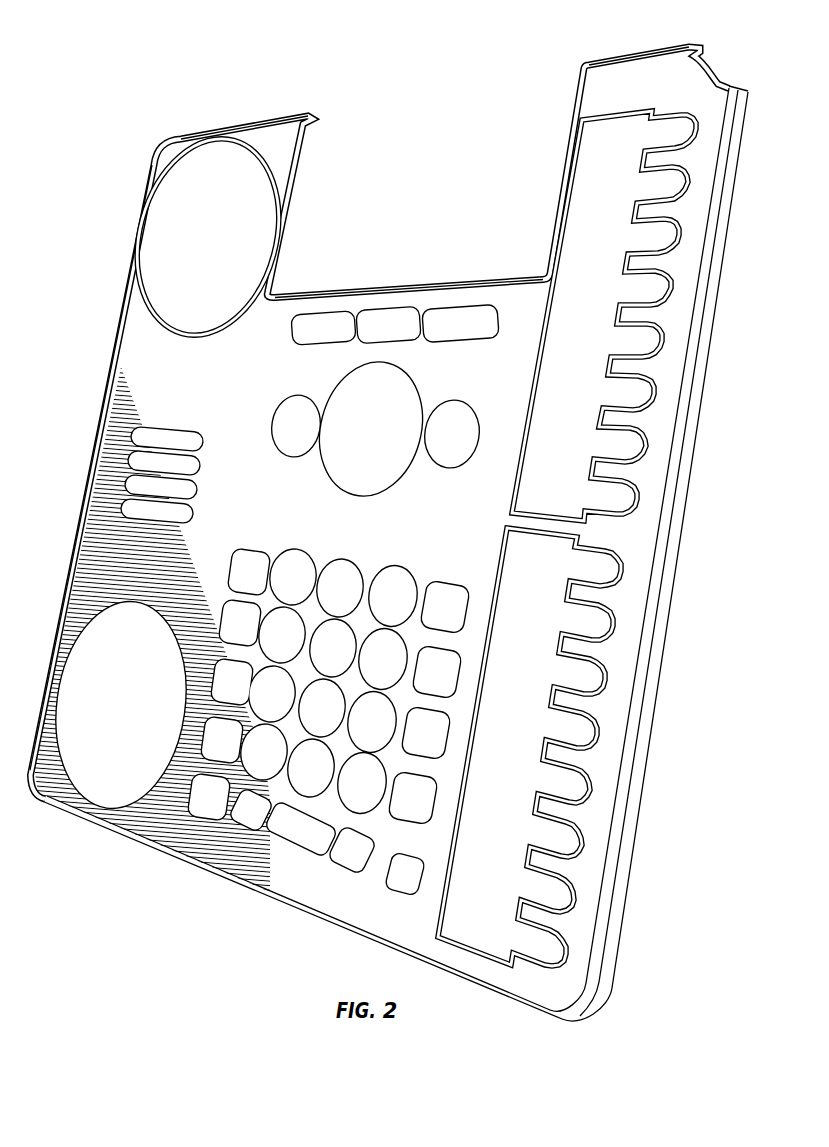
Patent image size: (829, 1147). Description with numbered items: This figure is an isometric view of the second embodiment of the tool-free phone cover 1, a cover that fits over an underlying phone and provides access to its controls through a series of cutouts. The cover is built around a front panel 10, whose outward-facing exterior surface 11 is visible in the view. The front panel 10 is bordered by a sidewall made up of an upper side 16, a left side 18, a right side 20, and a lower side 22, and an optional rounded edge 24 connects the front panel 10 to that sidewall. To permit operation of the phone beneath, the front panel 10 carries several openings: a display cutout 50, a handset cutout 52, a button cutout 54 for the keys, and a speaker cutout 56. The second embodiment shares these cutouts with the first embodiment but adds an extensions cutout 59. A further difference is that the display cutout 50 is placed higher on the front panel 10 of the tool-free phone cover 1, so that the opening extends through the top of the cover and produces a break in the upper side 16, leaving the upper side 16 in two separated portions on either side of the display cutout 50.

The tool-free phone cover 1 is at (381, 513).
The front panel 10 is at (381, 513).
The exterior surface 11 is at (390, 513).
The upper side 16 is at (255, 121).
The left side 18 is at (83, 491).
The right side 20 is at (658, 594).
The lower side 22 is at (287, 909).
The rounded edge 24 is at (671, 488).
The display cutout 50 is at (388, 219).
The handset cutout 52 is at (188, 252).
The button cutout 54 is at (321, 660).
The speaker cutout 56 is at (126, 488).
The extensions cutout 59 is at (563, 369).